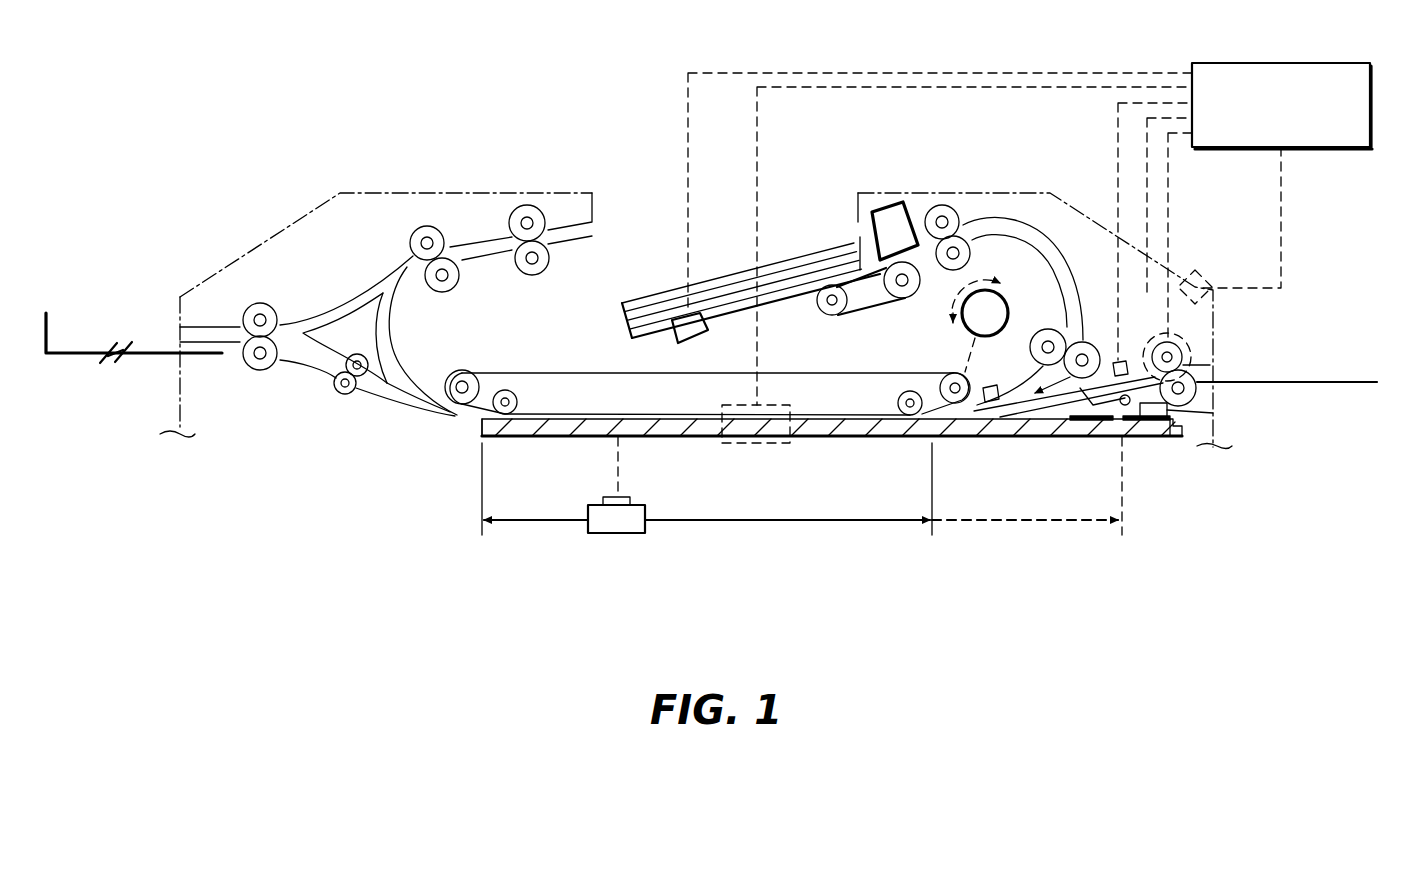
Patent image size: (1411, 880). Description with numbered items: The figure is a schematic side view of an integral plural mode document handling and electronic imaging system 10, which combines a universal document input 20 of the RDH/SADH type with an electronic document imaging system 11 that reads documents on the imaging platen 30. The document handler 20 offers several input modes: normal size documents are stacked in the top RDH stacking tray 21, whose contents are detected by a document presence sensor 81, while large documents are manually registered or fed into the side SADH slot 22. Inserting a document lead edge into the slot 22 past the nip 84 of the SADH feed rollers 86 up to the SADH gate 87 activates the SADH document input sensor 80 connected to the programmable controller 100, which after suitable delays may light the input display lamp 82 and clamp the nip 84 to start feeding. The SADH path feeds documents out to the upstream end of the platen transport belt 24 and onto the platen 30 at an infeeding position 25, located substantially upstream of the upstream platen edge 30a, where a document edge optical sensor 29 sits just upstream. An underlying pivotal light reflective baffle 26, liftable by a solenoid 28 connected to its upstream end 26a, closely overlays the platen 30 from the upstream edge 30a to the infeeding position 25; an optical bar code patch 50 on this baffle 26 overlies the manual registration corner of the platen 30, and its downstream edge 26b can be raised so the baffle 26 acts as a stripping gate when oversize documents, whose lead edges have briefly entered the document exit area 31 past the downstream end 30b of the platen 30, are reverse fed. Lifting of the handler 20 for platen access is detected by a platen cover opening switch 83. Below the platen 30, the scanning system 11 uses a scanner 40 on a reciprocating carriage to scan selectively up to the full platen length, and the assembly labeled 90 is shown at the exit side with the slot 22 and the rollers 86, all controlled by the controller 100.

The integral plural mode document handling and electronic imaging system 10 is at (570, 557).
The electronic document imaging system 11 is at (613, 495).
The universal document input 20 is at (567, 158).
The RDH stacking tray 21 is at (782, 303).
The SADH slot 22 is at (1268, 378).
The platen transport belt 24 is at (840, 413).
The infeeding position 25 is at (940, 405).
The baffle 26 is at (1023, 437).
The upstream end of the baffle 26a is at (1118, 420).
The downstream edge of the baffle 26b is at (958, 420).
The solenoid 28 is at (1160, 410).
The document edge optical sensor 29 is at (992, 385).
The imaging platen 30 is at (662, 440).
The upstream platen edge 30a is at (1133, 437).
The downstream end of the platen 30b is at (493, 440).
The document exit area 31 is at (455, 416).
The scanner 40 is at (613, 535).
The optical bar code patch 50 is at (1092, 437).
The SADH document input sensor 80 is at (1115, 357).
The document presence sensor 81 is at (693, 343).
The input display lamp 82 is at (1190, 280).
The platen cover opening switch 83 is at (750, 445).
The nip 84 is at (1183, 347).
The SADH feed rollers 86 is at (1153, 347).
The SADH gate 87 is at (1060, 437).
The exit module 90 is at (1188, 238).
The programmable controller 100 is at (1320, 147).